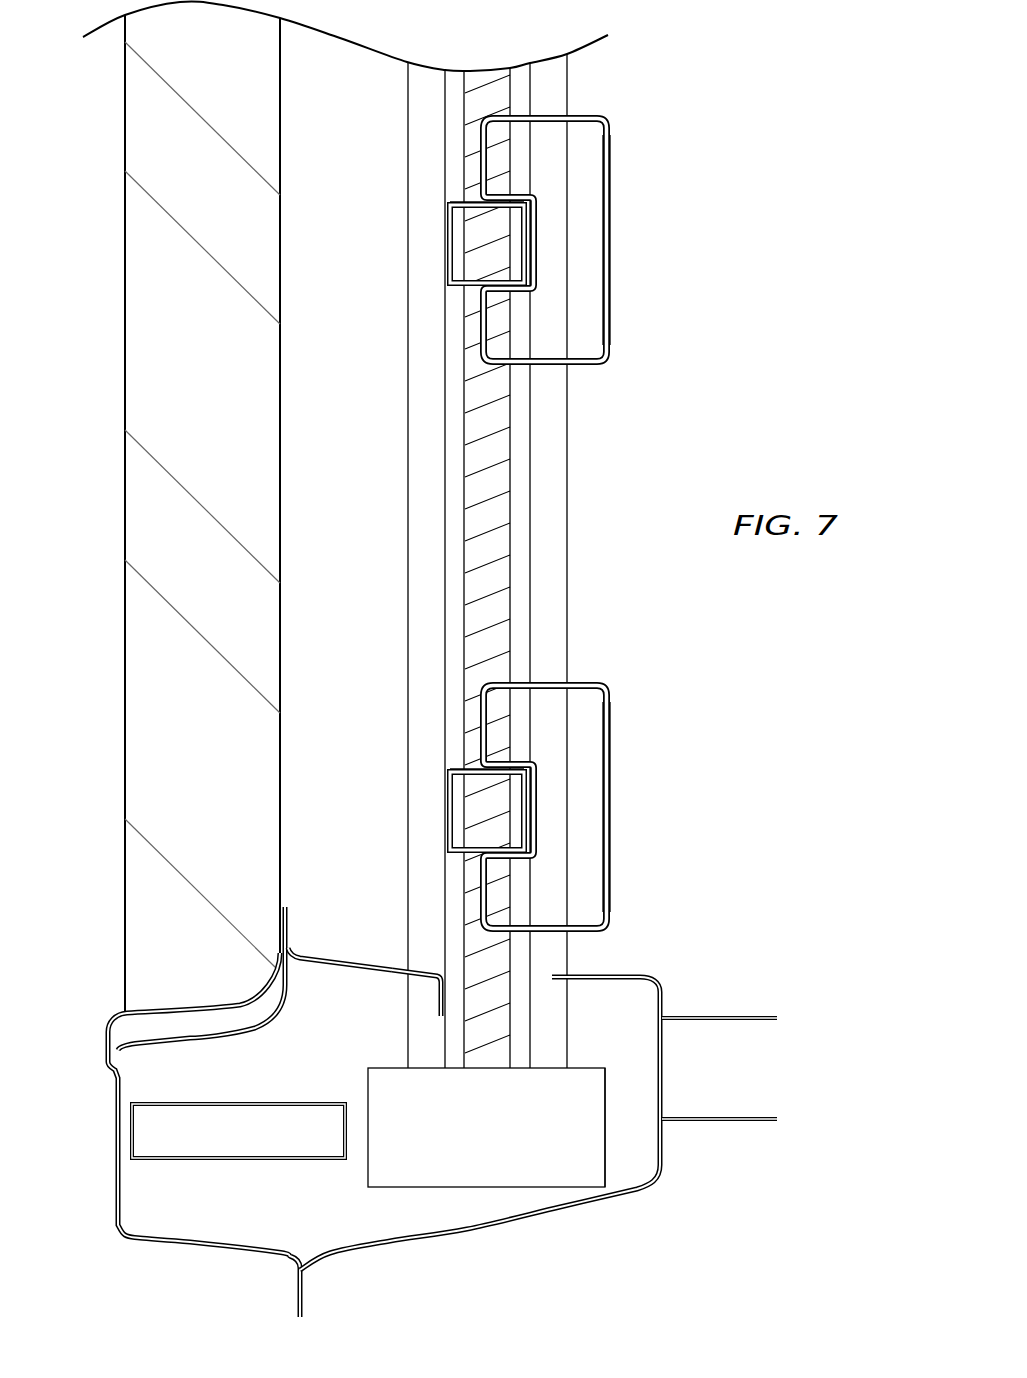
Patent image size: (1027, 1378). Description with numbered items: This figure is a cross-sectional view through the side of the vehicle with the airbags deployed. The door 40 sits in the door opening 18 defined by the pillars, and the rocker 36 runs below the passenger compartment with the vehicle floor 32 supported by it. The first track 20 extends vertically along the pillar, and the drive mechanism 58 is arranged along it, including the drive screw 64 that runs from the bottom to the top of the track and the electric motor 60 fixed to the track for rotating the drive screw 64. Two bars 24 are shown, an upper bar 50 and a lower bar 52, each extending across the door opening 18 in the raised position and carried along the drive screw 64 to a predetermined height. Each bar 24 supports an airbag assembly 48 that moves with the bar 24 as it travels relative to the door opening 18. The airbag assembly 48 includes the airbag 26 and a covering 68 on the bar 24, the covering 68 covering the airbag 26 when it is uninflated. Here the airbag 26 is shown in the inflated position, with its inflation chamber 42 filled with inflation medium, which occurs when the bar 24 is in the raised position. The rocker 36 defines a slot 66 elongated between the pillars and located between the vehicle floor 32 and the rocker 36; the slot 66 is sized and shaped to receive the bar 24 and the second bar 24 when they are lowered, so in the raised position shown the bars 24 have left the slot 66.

The door opening 18 is at (283, 906).
The first track 20 is at (568, 452).
The bar 24 is at (447, 222).
The airbag 26 is at (604, 222).
The vehicle floor 32 is at (664, 992).
The rocker 36 is at (313, 957).
The door 40 is at (125, 574).
The inflation chamber 42 is at (573, 148).
The airbag assembly 48 is at (564, 501).
The upper bar 50 is at (457, 202).
The lower bar 52 is at (455, 770).
The drive mechanism 58 is at (628, 1088).
The electric motor 60 is at (607, 1146).
The drive screw 64 is at (512, 608).
The slot 66 is at (392, 967).
The covering 68 is at (609, 173).